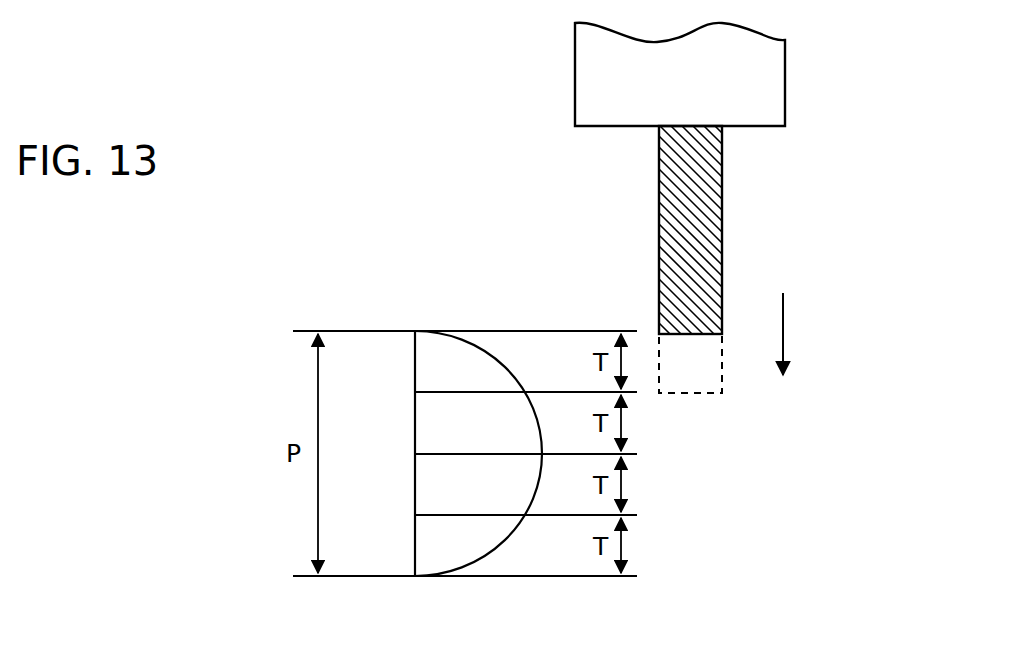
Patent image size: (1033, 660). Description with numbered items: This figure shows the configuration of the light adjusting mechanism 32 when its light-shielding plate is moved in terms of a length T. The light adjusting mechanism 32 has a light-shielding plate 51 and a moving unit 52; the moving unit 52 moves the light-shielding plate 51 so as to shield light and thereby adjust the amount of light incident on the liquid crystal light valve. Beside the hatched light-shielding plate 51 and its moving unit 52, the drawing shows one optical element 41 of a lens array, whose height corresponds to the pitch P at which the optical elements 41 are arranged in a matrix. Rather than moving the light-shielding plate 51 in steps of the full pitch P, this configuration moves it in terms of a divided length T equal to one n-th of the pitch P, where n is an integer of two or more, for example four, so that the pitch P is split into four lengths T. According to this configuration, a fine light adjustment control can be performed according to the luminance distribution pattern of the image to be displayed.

The moving unit 52 is at (762, 83).
The light-shielding plate 51 is at (705, 240).
The light adjusting mechanism 32 is at (566, 170).
The optical element 41 is at (432, 350).